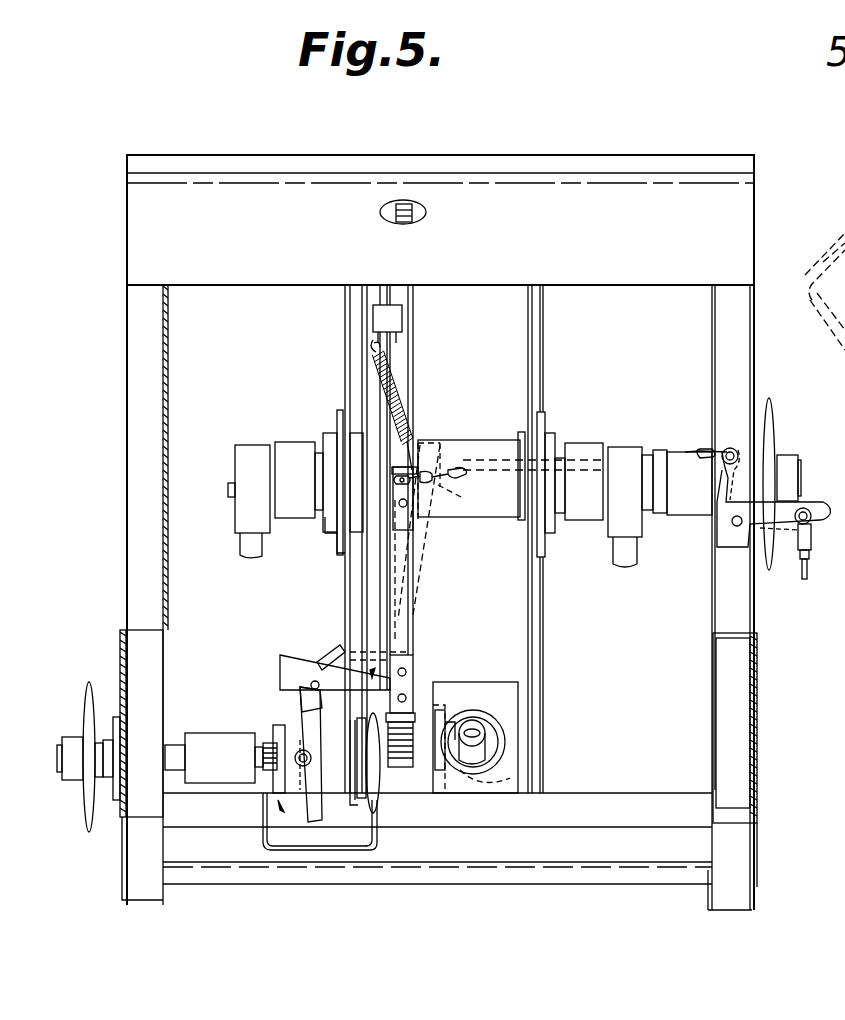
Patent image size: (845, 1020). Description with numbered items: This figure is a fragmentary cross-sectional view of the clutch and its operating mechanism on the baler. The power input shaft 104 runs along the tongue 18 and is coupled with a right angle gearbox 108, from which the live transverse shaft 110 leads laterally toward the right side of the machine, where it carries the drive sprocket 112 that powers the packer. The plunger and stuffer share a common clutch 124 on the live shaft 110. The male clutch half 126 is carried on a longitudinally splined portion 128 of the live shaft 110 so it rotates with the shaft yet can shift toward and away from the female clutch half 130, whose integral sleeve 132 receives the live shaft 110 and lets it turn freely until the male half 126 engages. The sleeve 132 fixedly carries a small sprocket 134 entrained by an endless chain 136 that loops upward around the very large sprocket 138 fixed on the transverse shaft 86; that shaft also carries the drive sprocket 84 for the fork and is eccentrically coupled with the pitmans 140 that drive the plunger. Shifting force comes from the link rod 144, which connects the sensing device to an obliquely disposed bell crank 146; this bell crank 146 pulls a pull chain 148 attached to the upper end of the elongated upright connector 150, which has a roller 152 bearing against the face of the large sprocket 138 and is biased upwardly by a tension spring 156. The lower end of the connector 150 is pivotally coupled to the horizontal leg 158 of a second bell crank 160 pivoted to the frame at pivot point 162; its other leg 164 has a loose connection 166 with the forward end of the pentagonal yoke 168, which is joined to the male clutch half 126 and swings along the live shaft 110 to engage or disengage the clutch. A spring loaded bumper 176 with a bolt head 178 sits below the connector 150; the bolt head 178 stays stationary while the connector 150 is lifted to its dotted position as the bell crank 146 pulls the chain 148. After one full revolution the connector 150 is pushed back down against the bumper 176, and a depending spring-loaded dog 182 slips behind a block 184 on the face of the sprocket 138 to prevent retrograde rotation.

The tongue 18 is at (757, 713).
The drive sprocket 84 is at (773, 410).
The drive shaft 86 is at (800, 484).
The power input shaft 104 is at (482, 740).
The right angle gearbox 108 is at (510, 707).
The live transverse shaft 110 is at (173, 748).
The drive sprocket 112 is at (87, 698).
The clutch 124 is at (297, 815).
The male clutch half 126 is at (277, 780).
The longitudinally splined portion 128 is at (267, 757).
The female clutch half 130 is at (340, 803).
The sleeve 132 is at (357, 777).
The small sprocket 134 is at (377, 843).
The endless chain 136 is at (370, 397).
The large sprocket 138 is at (380, 578).
The pitmans 140 is at (248, 450).
The link rod 144 is at (798, 575).
The bell crank 146 is at (720, 480).
The pull chain 148 is at (457, 467).
The connector 150 is at (403, 620).
The roller 152 is at (462, 498).
The tension spring 156 is at (402, 387).
The horizontal leg 158 is at (357, 693).
The bell crank 160 is at (372, 672).
The pivot point 162 is at (298, 680).
The leg 164 is at (297, 717).
The loose connection 166 is at (298, 753).
The yoke 168 is at (280, 812).
The spring loaded bumper 176 is at (420, 737).
The bolt head 178 is at (415, 712).
The spring-loaded dog 182 is at (405, 347).
The block 184 is at (410, 437).